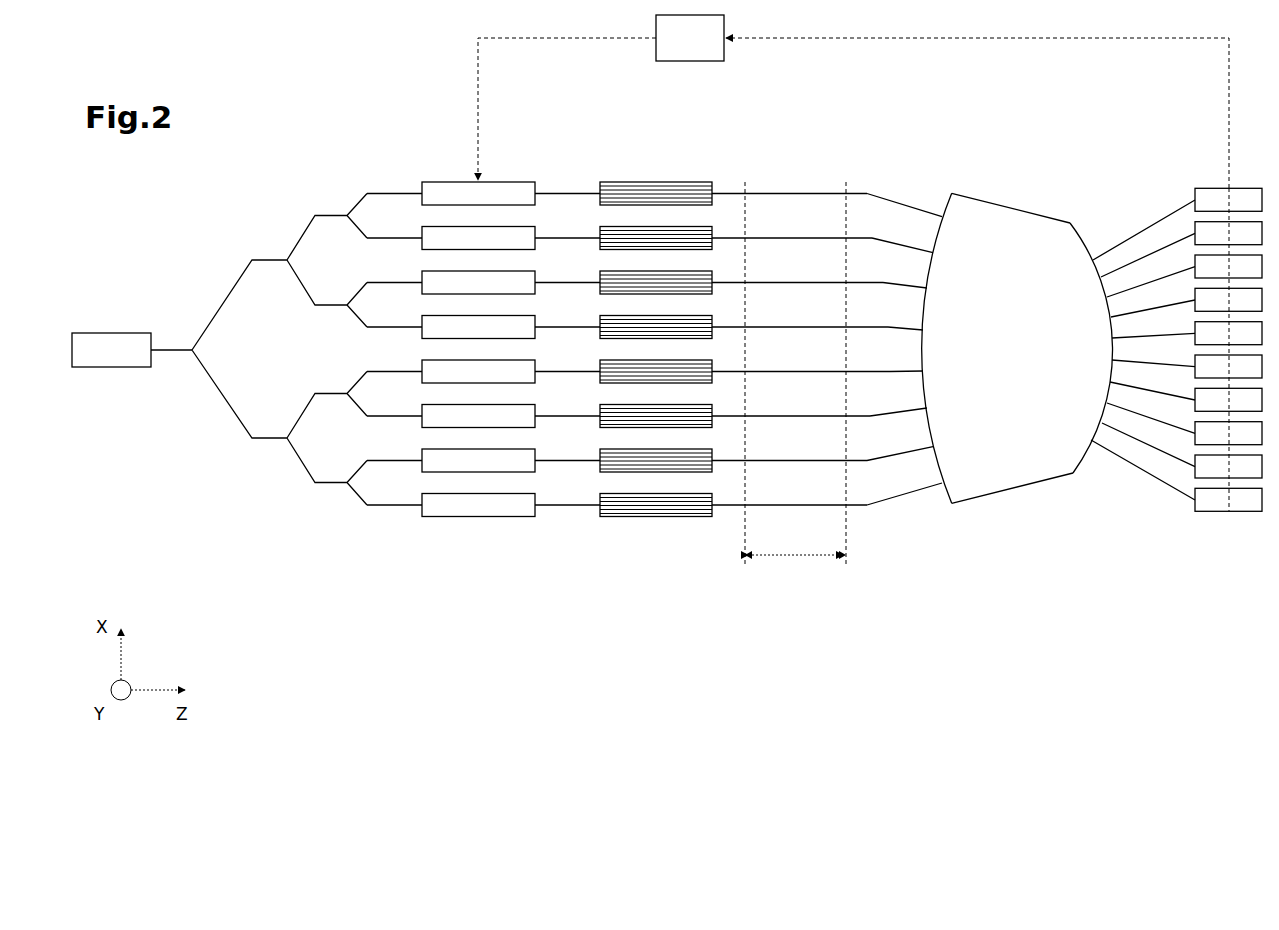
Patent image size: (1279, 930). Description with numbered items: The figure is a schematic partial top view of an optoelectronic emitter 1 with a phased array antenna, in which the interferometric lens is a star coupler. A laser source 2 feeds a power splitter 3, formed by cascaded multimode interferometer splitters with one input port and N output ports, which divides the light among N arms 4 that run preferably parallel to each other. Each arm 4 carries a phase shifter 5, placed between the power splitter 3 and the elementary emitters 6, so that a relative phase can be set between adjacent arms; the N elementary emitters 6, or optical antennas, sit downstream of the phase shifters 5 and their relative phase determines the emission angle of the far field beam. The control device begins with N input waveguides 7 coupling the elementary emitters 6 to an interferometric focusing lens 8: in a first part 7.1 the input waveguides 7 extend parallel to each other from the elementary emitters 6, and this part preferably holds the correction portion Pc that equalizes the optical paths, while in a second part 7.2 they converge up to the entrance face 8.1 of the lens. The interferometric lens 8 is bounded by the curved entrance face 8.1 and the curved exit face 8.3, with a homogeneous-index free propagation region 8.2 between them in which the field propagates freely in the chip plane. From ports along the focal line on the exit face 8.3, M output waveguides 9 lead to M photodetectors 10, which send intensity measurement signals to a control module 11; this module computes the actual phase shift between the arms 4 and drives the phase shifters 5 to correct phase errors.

The optoelectronic emitter 1 is at (282, 95).
The laser source 2 is at (112, 369).
The power splitter 3 is at (270, 492).
The arms 4 is at (396, 511).
The phase shifters 5 is at (478, 522).
The elementary emitters 6 is at (656, 522).
The input waveguides 7 is at (817, 192).
The first part of the input waveguides 7.1 is at (780, 192).
The second part of the input waveguides 7.2 is at (900, 203).
The interferometric focusing lens 8 is at (1012, 350).
The entrance face 8.1 is at (934, 458).
The free propagation region 8.2 is at (1011, 455).
The exit face 8.3 is at (1093, 456).
The output waveguides 9 is at (1145, 224).
The photodetectors 10 is at (1229, 513).
The control module 11 is at (688, 63).